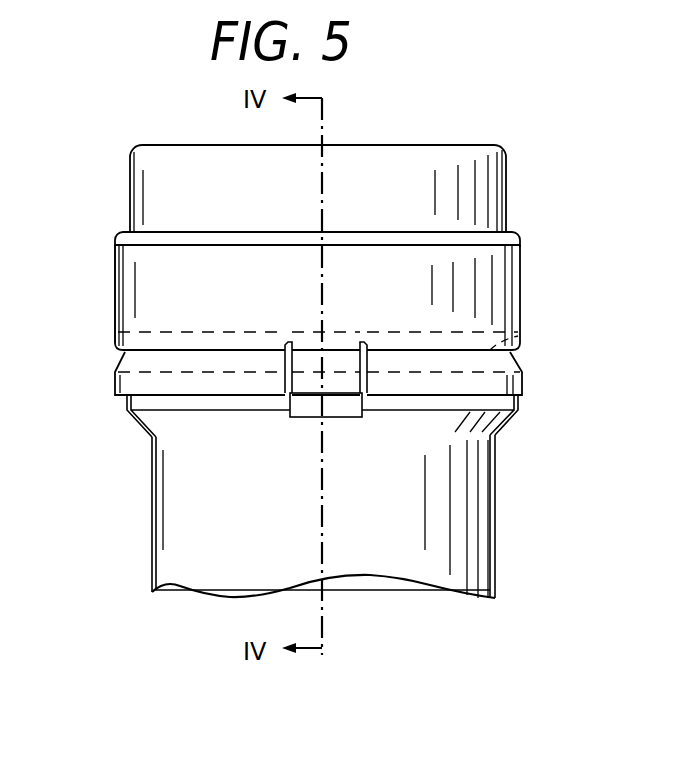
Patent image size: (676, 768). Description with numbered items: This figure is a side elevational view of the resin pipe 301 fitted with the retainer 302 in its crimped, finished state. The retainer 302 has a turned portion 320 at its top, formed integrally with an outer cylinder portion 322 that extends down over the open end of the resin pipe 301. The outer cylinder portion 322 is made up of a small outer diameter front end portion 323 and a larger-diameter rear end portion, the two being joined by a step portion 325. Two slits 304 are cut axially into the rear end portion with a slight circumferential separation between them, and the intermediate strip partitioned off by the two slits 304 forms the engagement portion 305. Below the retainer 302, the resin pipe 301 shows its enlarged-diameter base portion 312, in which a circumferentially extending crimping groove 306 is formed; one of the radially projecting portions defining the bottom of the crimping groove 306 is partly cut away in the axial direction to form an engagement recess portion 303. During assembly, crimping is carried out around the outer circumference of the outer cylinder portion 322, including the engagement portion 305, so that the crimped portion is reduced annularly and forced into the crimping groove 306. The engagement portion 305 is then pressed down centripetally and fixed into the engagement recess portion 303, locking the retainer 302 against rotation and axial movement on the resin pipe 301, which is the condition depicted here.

The resin pipe 301 is at (132, 461).
The retainer 302 is at (94, 276).
The engagement recess portion 303 is at (307, 407).
The slits 304 is at (288, 343).
The engagement portion 305 is at (340, 387).
The crimping groove 306 is at (524, 343).
The enlarged-diameter base portion 312 is at (511, 398).
The turned portion 320 is at (403, 145).
The outer cylinder portion 322 is at (521, 275).
The small outer diameter front end portion 323 is at (494, 177).
The step portion 325 is at (125, 240).